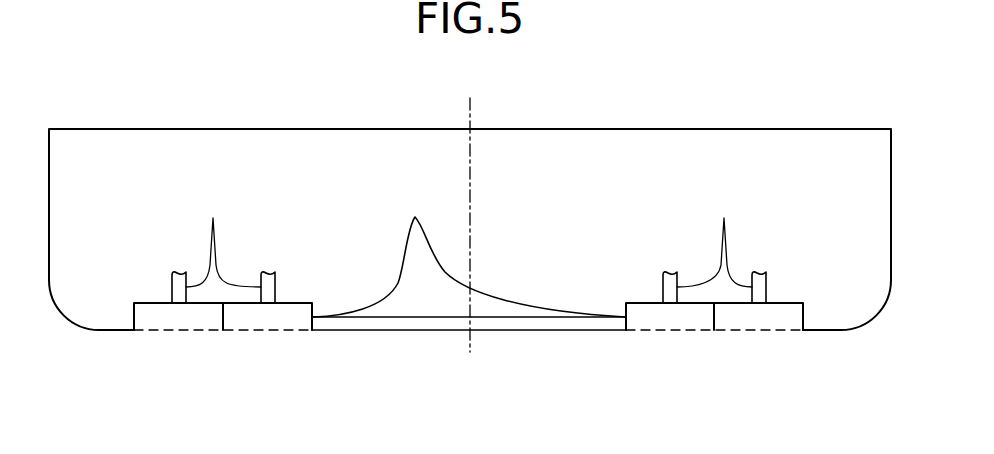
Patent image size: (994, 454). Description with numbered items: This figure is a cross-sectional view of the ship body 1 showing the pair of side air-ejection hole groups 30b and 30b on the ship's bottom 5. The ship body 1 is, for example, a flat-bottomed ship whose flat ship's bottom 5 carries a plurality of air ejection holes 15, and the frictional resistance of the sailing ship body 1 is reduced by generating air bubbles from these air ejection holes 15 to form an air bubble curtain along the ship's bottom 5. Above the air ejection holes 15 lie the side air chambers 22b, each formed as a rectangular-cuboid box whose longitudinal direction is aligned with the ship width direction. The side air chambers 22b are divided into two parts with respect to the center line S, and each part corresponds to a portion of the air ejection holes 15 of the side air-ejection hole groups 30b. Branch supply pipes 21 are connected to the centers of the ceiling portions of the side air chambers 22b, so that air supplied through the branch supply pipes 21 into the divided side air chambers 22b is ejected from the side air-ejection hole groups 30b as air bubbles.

The ship body 1 is at (644, 126).
The center line S is at (470, 115).
The ship's bottom 5 is at (784, 336).
The air ejection holes 15 is at (237, 331).
The branch supply pipes 21 is at (469, 247).
The side air chambers 22b is at (469, 254).
The side air-ejection hole groups 30b is at (195, 343).